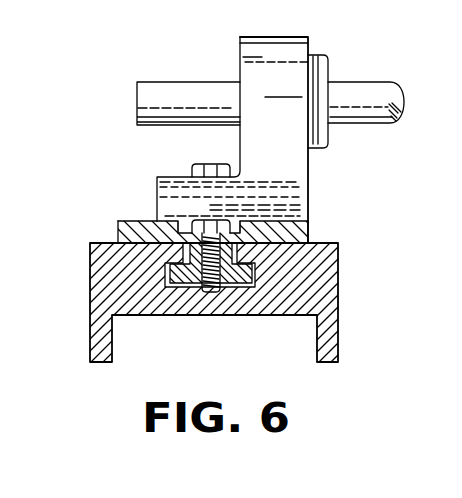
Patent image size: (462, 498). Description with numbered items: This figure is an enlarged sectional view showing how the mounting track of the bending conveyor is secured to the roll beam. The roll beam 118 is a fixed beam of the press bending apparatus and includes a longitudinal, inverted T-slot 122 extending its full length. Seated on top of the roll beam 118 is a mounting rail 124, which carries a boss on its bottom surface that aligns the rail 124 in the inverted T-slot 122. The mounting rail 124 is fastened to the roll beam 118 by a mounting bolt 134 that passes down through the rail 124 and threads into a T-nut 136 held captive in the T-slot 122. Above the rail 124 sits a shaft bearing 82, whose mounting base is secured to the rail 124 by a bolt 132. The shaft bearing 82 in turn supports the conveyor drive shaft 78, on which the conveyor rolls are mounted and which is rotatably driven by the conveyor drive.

The drive shaft 78 is at (362, 92).
The shaft bearing 82 is at (240, 57).
The roll beam 118 is at (328, 273).
The inverted T-slot 122 is at (178, 292).
The mounting rail 124 is at (307, 228).
The bolt 132 is at (192, 165).
The mounting bolt 134 is at (208, 220).
The T-nut 136 is at (233, 287).